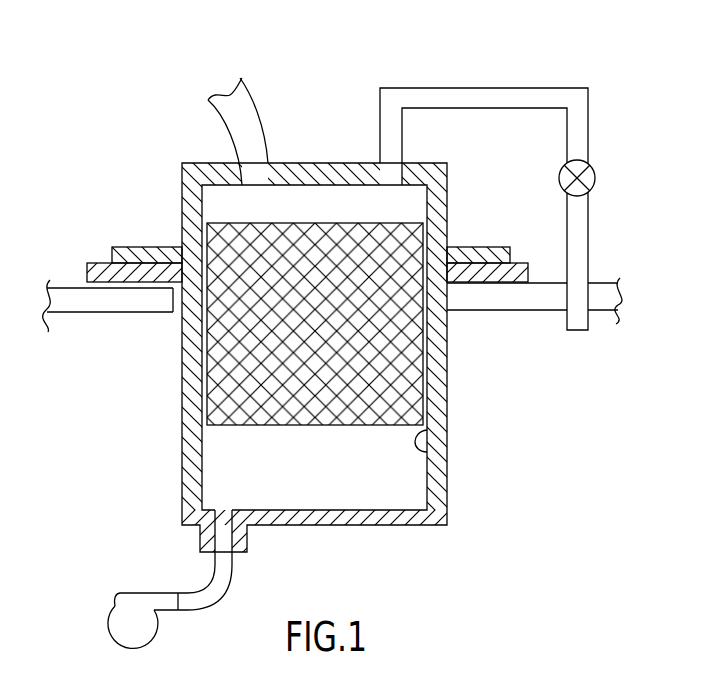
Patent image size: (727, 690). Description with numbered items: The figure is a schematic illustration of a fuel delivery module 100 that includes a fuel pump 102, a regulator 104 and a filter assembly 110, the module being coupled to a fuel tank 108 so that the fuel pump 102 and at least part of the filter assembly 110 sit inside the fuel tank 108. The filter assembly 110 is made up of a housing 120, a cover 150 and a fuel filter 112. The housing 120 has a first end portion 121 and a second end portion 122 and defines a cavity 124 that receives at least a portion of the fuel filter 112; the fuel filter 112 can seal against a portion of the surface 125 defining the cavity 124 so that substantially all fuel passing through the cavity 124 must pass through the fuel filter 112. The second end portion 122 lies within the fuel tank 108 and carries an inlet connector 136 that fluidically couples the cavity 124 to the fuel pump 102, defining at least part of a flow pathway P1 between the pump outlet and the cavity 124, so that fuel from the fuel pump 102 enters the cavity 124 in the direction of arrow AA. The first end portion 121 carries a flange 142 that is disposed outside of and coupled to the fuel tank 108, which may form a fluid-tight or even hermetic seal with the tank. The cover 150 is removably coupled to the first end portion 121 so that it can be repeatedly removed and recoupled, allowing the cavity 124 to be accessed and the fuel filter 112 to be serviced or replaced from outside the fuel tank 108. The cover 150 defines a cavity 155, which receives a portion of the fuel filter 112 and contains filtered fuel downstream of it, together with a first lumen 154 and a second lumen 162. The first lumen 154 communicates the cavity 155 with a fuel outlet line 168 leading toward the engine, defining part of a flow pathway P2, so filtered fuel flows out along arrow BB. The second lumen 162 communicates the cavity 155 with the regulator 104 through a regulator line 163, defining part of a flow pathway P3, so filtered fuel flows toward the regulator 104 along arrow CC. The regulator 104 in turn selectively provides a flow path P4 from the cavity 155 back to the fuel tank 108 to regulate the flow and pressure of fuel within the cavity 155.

The fuel delivery module 100 is at (102, 45).
The fuel pump 102 is at (120, 603).
The regulator 104 is at (595, 176).
The fuel tank 108 is at (57, 290).
The filter assembly 110 is at (113, 372).
The fuel filter 112 is at (430, 365).
The housing 120 is at (190, 375).
The first end portion 121 is at (183, 310).
The second end portion 122 is at (190, 478).
The cavity 124 is at (365, 475).
The surface 125 is at (428, 452).
The inlet connector 136 is at (247, 545).
The flange 142 is at (97, 263).
The cover 150 is at (182, 187).
The first lumen 154 is at (242, 182).
The cavity 155 is at (302, 207).
The second lumen 162 is at (400, 178).
The regulator line 163 is at (548, 88).
The fuel outlet line 168 is at (226, 92).
The arrow AA is at (217, 580).
The arrow BB is at (253, 158).
The arrow CC is at (390, 158).
The flow pathway P1 is at (217, 533).
The flow pathway P2 is at (268, 167).
The flow pathway P3 is at (380, 140).
The flow path P4 is at (583, 222).